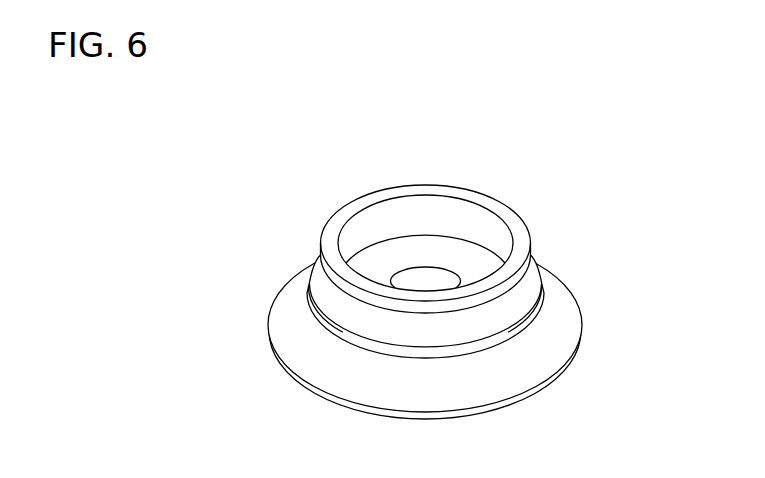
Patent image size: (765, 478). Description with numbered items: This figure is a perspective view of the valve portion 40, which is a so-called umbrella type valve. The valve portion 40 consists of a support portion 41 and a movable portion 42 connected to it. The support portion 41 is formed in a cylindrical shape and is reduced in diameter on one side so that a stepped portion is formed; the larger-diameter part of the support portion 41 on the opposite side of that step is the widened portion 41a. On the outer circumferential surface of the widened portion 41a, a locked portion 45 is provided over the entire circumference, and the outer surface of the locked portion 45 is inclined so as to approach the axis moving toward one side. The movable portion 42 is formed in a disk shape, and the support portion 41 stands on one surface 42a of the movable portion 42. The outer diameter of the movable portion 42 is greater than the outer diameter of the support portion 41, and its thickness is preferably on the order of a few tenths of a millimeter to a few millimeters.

The valve member 40 is at (427, 254).
The cylindrical portion 41 is at (377, 239).
The outer peripheral surface 41a is at (332, 276).
The flange portion 42 is at (456, 328).
The flange surface 42a is at (495, 382).
The lip portion 45 is at (322, 252).